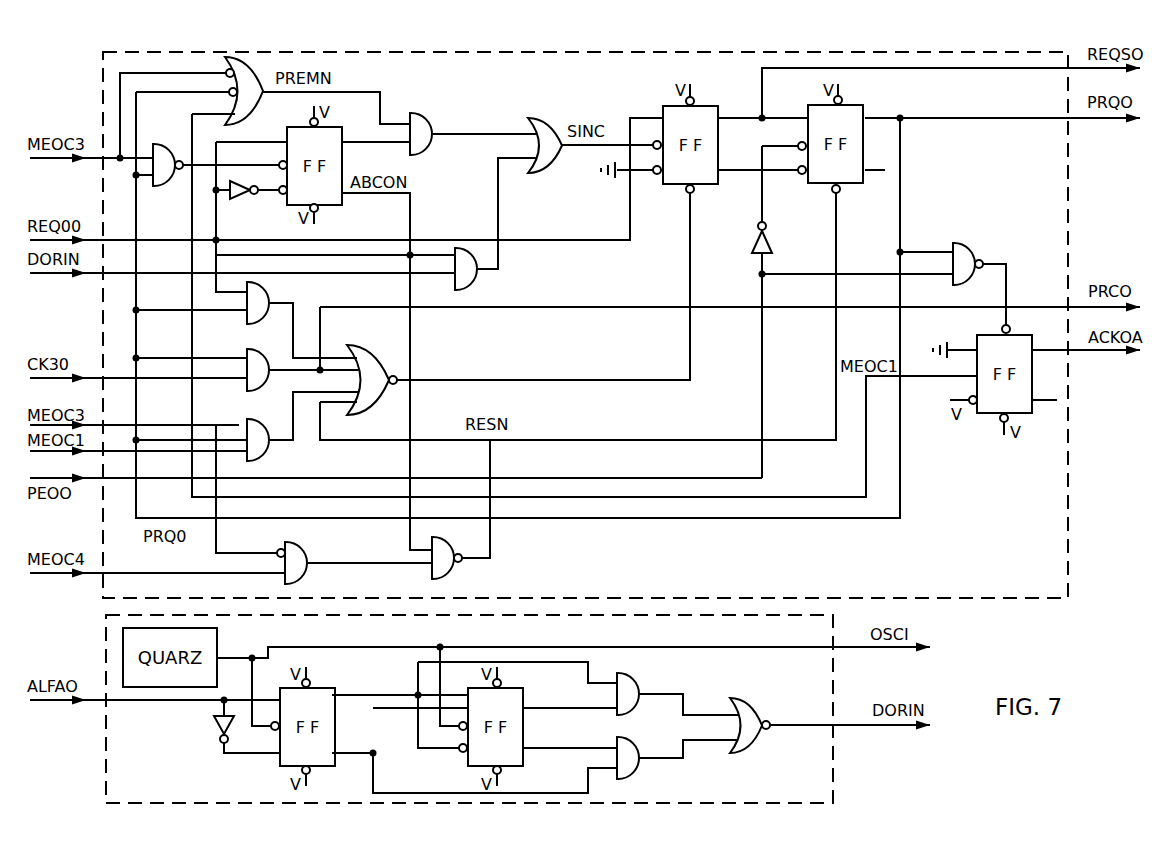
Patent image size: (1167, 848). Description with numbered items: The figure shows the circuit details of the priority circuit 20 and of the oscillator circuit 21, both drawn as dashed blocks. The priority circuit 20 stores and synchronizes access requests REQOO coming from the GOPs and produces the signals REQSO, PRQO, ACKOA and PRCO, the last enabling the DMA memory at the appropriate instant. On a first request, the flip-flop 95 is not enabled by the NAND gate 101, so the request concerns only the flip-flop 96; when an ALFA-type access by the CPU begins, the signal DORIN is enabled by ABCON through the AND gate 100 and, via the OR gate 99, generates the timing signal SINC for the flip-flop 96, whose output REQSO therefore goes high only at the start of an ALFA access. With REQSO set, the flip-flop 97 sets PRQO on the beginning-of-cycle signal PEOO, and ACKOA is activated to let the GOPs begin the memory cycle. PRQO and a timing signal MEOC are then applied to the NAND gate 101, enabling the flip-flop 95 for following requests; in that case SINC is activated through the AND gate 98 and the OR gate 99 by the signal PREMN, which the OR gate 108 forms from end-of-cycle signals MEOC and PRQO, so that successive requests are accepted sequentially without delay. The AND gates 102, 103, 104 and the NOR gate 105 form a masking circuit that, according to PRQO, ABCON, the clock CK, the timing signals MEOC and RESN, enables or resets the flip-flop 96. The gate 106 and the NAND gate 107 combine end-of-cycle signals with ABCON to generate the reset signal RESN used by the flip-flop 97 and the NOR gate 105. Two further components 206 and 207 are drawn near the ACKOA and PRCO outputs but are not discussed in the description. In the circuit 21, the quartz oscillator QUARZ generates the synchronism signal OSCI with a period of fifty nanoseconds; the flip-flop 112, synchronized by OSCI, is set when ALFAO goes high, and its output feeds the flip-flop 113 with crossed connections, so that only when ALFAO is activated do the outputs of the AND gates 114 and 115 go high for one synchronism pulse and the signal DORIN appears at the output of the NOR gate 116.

The priority circuit 20 is at (997, 577).
The oscillator and DORIN generating circuit 21 is at (816, 788).
The flip-flop 95 is at (331, 190).
The flip-flop 96 is at (673, 179).
The flip-flop 97 is at (850, 177).
The AND gate 98 is at (427, 117).
The OR gate 99 is at (545, 155).
The AND gate 100 is at (460, 283).
The NAND gate 101 is at (165, 180).
The AND gate 102 is at (262, 283).
The AND gate 103 is at (262, 360).
The AND gate 104 is at (262, 430).
The NOR gate 105 is at (375, 397).
The AND gate 106 is at (298, 560).
The NAND gate 107 is at (440, 568).
The OR gate 108 is at (246, 105).
The flip-flop 112 is at (322, 752).
The flip-flop 113 is at (512, 752).
The AND gate 114 is at (632, 688).
The AND gate 115 is at (632, 775).
The NOR gate 116 is at (752, 745).
The NAND gate 206 is at (969, 236).
The flip-flop 207 is at (1019, 403).